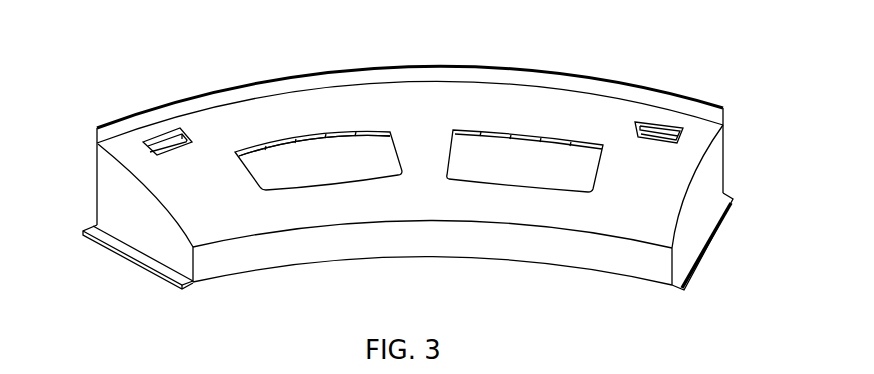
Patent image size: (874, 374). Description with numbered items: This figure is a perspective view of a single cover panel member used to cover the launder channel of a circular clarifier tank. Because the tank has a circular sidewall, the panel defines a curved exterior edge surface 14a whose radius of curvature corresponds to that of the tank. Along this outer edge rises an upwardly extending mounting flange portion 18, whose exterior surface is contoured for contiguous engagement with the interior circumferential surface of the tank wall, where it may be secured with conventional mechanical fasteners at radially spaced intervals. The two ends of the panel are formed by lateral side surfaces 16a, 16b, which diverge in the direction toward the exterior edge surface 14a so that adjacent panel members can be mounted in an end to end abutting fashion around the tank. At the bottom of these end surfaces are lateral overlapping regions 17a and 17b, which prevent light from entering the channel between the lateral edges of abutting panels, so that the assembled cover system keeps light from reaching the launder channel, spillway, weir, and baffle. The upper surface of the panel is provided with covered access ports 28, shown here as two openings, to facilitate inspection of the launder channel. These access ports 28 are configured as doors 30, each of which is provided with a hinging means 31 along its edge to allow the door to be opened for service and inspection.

The exterior edge surface 14a is at (97, 182).
The mounting flange portion 18 is at (567, 87).
The lateral side surface 16a is at (137, 230).
The lateral side surface 16b is at (705, 182).
The lateral overlapping region 17a is at (158, 267).
The lateral overlapping region 17b is at (688, 268).
The door 30 is at (338, 170).
The covered access port 28 is at (395, 129).
The hinging means 31 is at (277, 138).